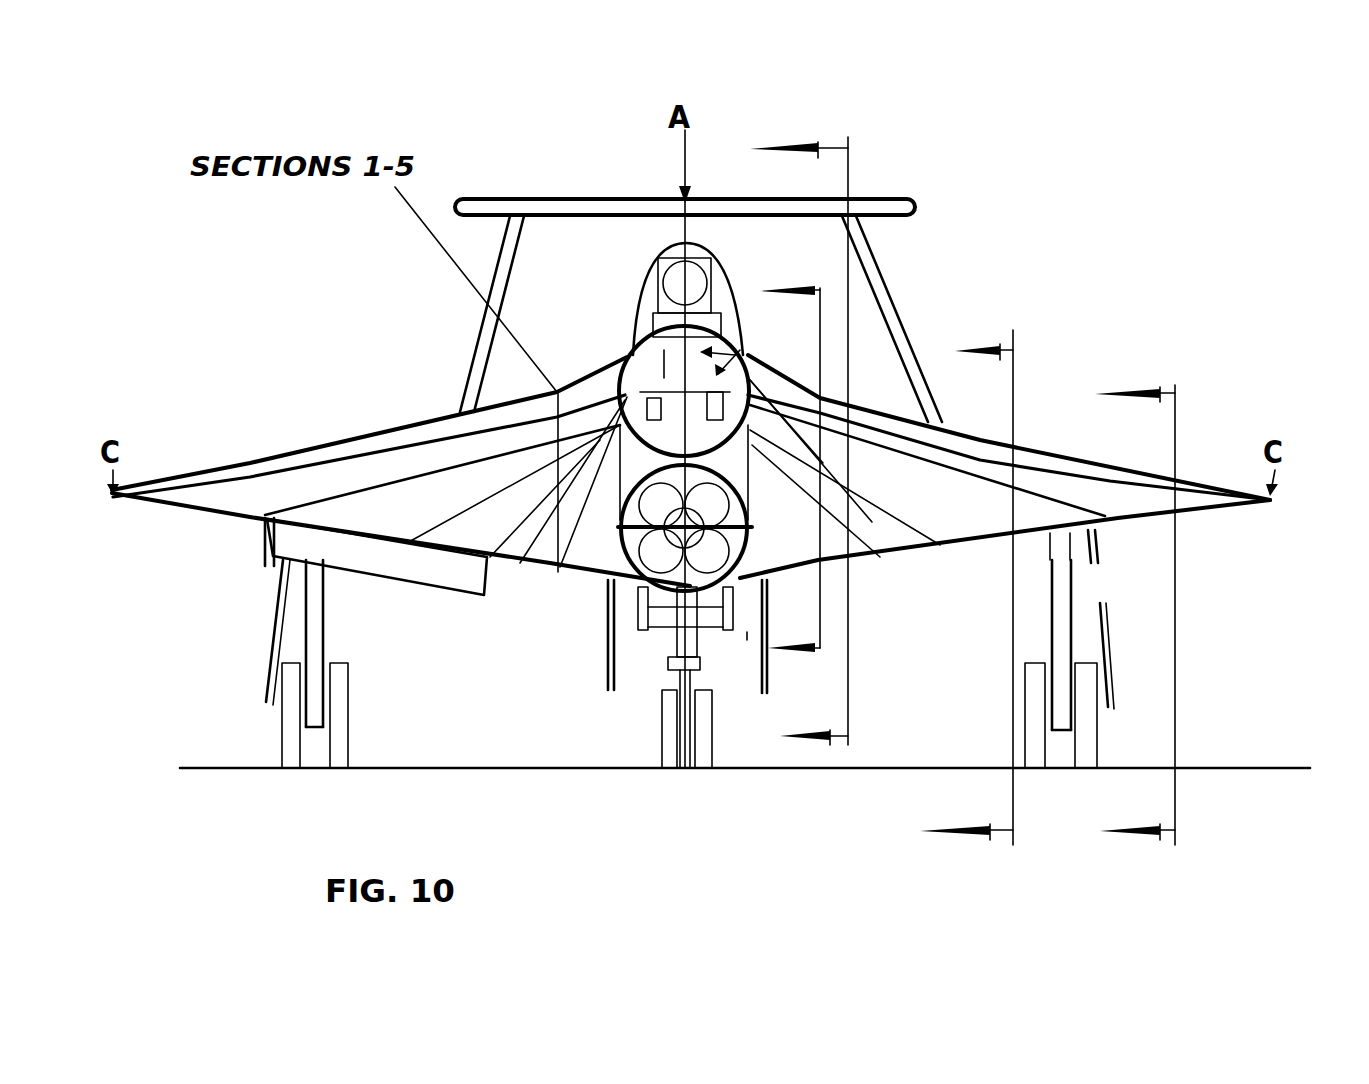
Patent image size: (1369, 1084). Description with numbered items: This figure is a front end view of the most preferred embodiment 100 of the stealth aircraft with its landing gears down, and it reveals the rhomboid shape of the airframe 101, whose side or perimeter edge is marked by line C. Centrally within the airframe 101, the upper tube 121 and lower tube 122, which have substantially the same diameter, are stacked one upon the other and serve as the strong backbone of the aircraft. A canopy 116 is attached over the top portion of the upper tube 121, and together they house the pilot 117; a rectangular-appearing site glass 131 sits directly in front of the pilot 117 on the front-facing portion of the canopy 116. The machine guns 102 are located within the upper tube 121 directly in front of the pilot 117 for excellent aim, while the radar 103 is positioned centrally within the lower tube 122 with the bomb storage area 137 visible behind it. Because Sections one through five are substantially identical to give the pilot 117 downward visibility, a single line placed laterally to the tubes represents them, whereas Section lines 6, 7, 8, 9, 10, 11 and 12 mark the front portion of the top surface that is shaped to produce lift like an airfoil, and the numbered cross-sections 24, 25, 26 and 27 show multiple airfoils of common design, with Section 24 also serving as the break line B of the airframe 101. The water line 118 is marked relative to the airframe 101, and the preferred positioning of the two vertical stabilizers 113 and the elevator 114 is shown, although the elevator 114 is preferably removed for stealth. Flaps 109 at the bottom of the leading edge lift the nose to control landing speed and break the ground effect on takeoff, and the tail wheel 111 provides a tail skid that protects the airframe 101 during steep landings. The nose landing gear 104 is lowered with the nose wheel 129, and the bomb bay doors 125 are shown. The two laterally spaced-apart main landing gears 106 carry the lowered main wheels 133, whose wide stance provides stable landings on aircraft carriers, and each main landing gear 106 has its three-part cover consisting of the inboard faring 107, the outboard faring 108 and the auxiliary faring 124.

The most preferred embodiment 100 is at (200, 290).
The airframe 101 is at (212, 478).
The machine guns 102 is at (735, 355).
The radar 103 is at (692, 536).
The nose landing gear 104 is at (670, 675).
The main landing gears 106 is at (318, 628).
The inboard main landing gear cover or faring 107 is at (603, 667).
The outboard main landing gear cover or faring 108 is at (270, 654).
The flaps 109 is at (377, 465).
The tail wheel 111 is at (772, 605).
The vertical stabilizers 113 is at (487, 345).
The elevator 114 is at (566, 206).
The canopy 116 is at (708, 257).
The pilot 117 is at (678, 290).
The water line 118 is at (200, 772).
The upper tube 121 is at (640, 360).
The lower tube 122 is at (585, 578).
The auxiliary main landing gear cover or faring 124 is at (258, 542).
The bomb bay doors 125 is at (747, 640).
The nose wheel 129 is at (693, 746).
The site glass 131 is at (673, 260).
The main wheels 133 is at (338, 737).
The bomb storage area 137 is at (605, 617).
The Section 24 is at (797, 476).
The Section 25 is at (829, 429).
The Section 26 is at (989, 595).
The Section 27 is at (1160, 619).
The Section 6 is at (943, 600).
The Section 7 is at (959, 548).
The Section 8 is at (998, 564).
The Section 9 is at (971, 294).
The Section 10 is at (1050, 314).
The Section 11 is at (1094, 350).
The Section 12 is at (1136, 379).